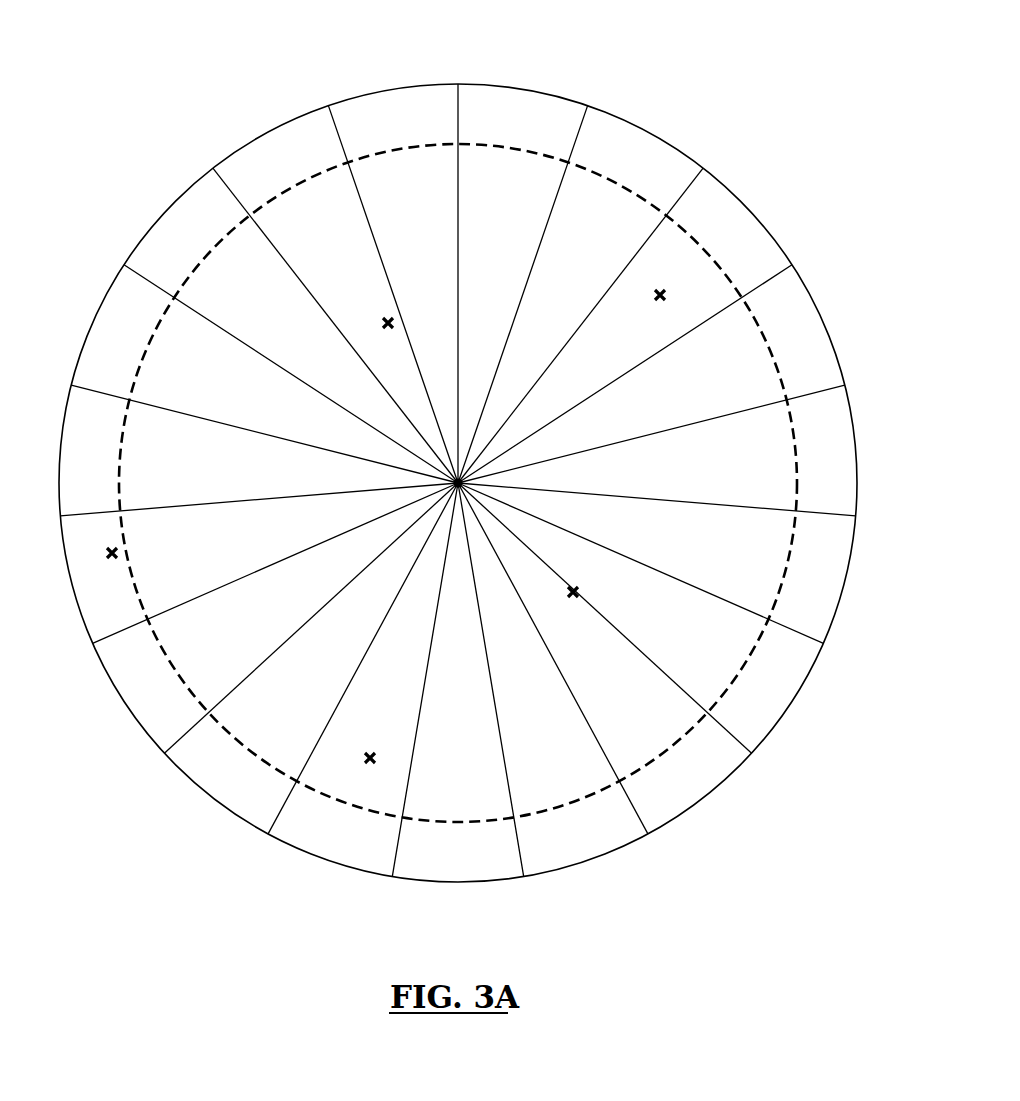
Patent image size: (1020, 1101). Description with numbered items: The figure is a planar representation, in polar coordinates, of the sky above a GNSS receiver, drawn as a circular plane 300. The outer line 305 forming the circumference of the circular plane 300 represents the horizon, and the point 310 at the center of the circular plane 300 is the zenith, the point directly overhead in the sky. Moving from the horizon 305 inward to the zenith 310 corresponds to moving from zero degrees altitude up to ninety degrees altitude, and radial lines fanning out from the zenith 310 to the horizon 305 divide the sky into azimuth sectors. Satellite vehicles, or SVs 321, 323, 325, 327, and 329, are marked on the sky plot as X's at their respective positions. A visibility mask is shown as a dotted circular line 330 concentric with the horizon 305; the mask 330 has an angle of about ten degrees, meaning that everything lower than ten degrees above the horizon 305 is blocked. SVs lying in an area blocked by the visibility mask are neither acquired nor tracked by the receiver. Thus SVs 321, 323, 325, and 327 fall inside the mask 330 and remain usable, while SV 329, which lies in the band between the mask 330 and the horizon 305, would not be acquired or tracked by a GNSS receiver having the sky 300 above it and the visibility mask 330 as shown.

The circular plane 300 is at (793, 76).
The horizon line 305 is at (766, 223).
The zenith point 310 is at (462, 478).
The visibility mask 330 is at (495, 145).
The SV 321 is at (392, 318).
The SV 323 is at (664, 290).
The SV 325 is at (578, 596).
The SV 327 is at (375, 752).
The SV 329 is at (117, 548).